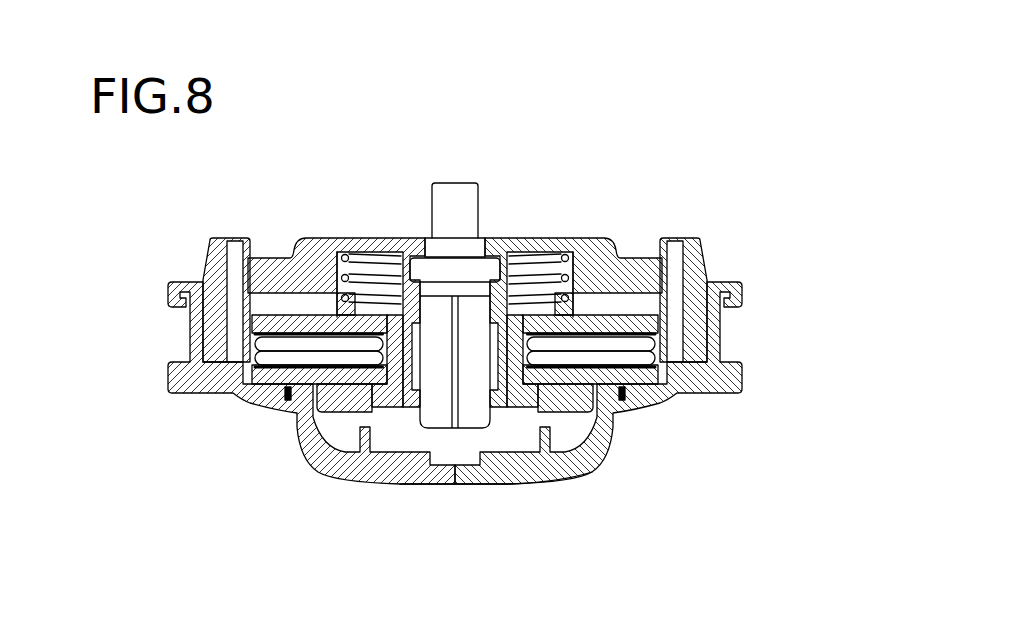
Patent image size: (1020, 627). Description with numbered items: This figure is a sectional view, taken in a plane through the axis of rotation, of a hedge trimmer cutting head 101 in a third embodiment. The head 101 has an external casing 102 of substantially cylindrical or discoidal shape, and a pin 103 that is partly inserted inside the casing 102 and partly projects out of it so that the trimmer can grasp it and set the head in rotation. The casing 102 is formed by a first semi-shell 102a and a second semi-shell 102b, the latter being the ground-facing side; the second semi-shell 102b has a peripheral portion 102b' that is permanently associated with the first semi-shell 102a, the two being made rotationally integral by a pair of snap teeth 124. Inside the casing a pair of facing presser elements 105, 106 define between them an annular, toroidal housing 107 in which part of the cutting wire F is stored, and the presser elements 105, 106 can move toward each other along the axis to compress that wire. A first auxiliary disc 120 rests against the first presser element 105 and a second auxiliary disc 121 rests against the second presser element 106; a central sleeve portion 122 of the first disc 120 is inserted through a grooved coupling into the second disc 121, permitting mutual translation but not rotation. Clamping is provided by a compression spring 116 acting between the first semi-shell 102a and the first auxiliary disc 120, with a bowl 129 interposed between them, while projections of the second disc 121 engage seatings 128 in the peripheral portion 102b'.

The head 101 is at (717, 82).
The external casing 102 is at (727, 270).
The first semi-shell 102a is at (643, 270).
The second semi-shell 102b is at (508, 439).
The peripheral portion 102b' is at (651, 383).
The pin 103 is at (452, 207).
The first presser element 105 is at (270, 300).
The second presser element 106 is at (270, 372).
The annular shaped housing 107 is at (352, 392).
The compression spring 116 is at (352, 310).
The first auxiliary disc 120 is at (322, 317).
The second auxiliary disc 121 is at (558, 380).
The central sleeve portion 122 is at (388, 305).
The snap teeth 124 is at (215, 270).
The seatings 128 is at (287, 400).
The bowl 129 is at (562, 313).
The cutting wire F is at (243, 353).